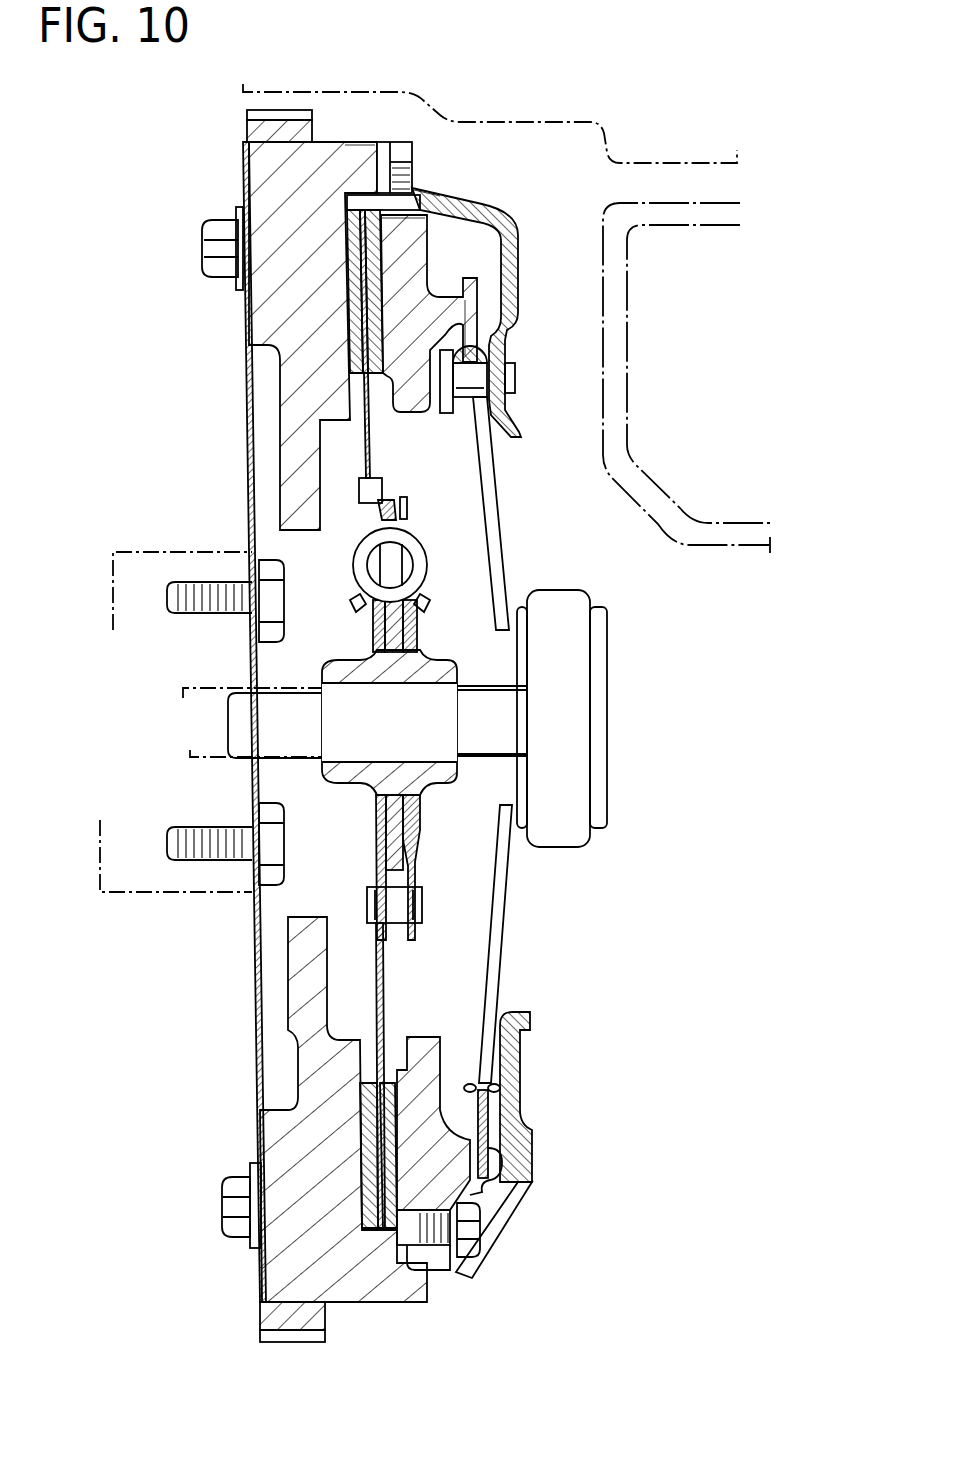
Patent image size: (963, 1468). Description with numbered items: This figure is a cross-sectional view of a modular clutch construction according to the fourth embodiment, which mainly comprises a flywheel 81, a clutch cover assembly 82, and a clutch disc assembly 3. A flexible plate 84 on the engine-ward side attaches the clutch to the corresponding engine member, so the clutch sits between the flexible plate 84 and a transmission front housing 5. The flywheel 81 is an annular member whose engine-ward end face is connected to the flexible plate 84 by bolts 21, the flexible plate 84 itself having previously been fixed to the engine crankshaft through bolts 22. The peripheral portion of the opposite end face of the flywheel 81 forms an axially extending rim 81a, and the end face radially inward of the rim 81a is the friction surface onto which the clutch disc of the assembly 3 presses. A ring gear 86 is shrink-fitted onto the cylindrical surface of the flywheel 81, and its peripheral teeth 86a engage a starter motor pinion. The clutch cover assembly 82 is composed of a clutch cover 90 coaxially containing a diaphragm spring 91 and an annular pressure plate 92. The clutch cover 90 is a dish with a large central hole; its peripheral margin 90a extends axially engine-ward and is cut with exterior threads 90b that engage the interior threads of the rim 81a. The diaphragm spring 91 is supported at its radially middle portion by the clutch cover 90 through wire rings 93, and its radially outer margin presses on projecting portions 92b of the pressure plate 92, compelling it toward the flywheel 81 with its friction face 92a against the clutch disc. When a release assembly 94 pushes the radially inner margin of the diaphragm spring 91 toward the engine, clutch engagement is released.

The clutch disc assembly 3 is at (430, 516).
The transmission front housing 5 is at (632, 318).
The bolts 21 is at (204, 252).
The bolts 22 is at (182, 840).
The flywheel 81 is at (294, 697).
The rim 81a is at (356, 150).
The clutch cover assembly 82 is at (389, 705).
The flexible plate 84 is at (246, 430).
The ring gear 86 is at (236, 711).
The circumferentially peripheral teeth 86a is at (287, 106).
The clutch cover 90 is at (361, 705).
The circumferentially peripheral margin 90a is at (412, 186).
The exterior threads 90b is at (346, 179).
The diaphragm spring 91 is at (493, 480).
The pressure plate 92 is at (437, 736).
The pressure plate friction surface 92a is at (388, 220).
The projecting portions 92b is at (450, 292).
The wire rings 93 is at (470, 352).
The release assembly 94 is at (615, 641).